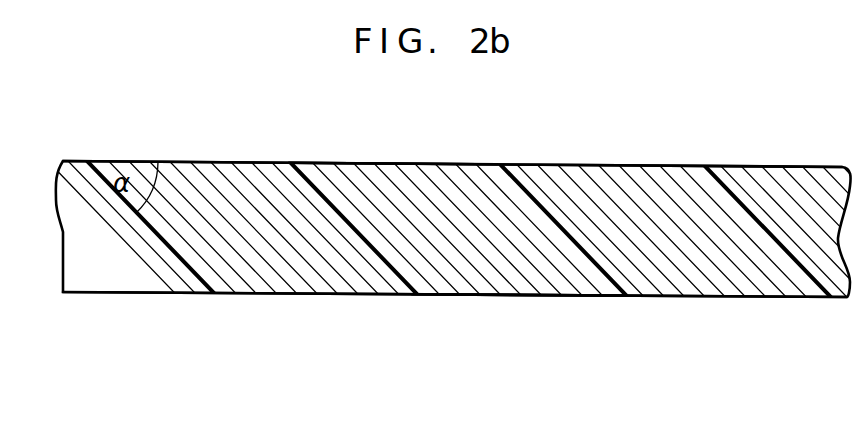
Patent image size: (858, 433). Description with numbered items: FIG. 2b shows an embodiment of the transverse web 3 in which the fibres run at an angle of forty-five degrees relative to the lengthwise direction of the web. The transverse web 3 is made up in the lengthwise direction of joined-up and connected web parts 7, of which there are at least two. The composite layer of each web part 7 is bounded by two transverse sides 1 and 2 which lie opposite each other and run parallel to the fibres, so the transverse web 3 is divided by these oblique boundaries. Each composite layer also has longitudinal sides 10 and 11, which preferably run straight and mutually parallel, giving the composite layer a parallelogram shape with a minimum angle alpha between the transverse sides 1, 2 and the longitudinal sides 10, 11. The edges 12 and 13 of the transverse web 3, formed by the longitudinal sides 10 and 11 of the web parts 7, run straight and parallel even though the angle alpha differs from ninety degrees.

The transverse side 1 is at (154, 233).
The transverse side 2 is at (350, 222).
The transverse web 3 is at (615, 136).
The web parts 7 is at (267, 248).
The longitudinal side 10 is at (218, 163).
The longitudinal side 11 is at (320, 295).
The edge of the transverse web 12 is at (398, 163).
The edge of the transverse web 13 is at (460, 295).